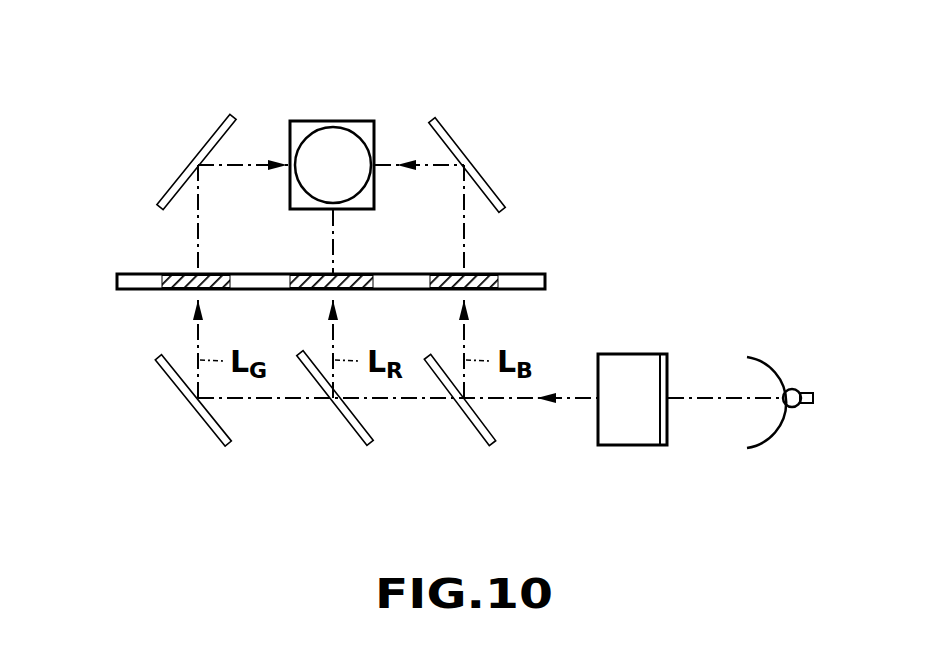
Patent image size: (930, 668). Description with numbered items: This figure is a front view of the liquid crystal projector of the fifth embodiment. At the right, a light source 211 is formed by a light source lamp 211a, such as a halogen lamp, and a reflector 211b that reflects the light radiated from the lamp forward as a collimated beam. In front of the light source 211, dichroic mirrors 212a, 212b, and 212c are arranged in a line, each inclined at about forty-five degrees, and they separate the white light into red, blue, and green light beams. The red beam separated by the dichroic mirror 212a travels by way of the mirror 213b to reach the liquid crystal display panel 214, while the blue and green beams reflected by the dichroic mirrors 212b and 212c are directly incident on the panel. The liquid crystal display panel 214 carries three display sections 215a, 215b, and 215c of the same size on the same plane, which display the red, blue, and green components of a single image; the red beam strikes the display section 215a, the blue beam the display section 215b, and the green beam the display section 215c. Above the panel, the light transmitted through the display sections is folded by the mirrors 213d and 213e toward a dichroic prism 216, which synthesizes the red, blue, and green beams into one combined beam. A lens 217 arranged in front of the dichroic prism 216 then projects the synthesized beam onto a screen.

The light source 211 is at (815, 390).
The light source lamp 211a is at (798, 390).
The reflector 211b is at (780, 442).
The dichroic mirror 212a is at (638, 353).
The dichroic mirror 212b is at (493, 440).
The dichroic mirror 212c is at (230, 440).
The mirror 213b is at (368, 440).
The mirror 213d is at (455, 137).
The mirror 213e is at (207, 138).
The liquid crystal display panel 214 is at (540, 273).
The display section 215a is at (365, 273).
The display section 215b is at (490, 273).
The display section 215c is at (178, 273).
The dichroic prism 216 is at (352, 119).
The lens 217 is at (370, 183).